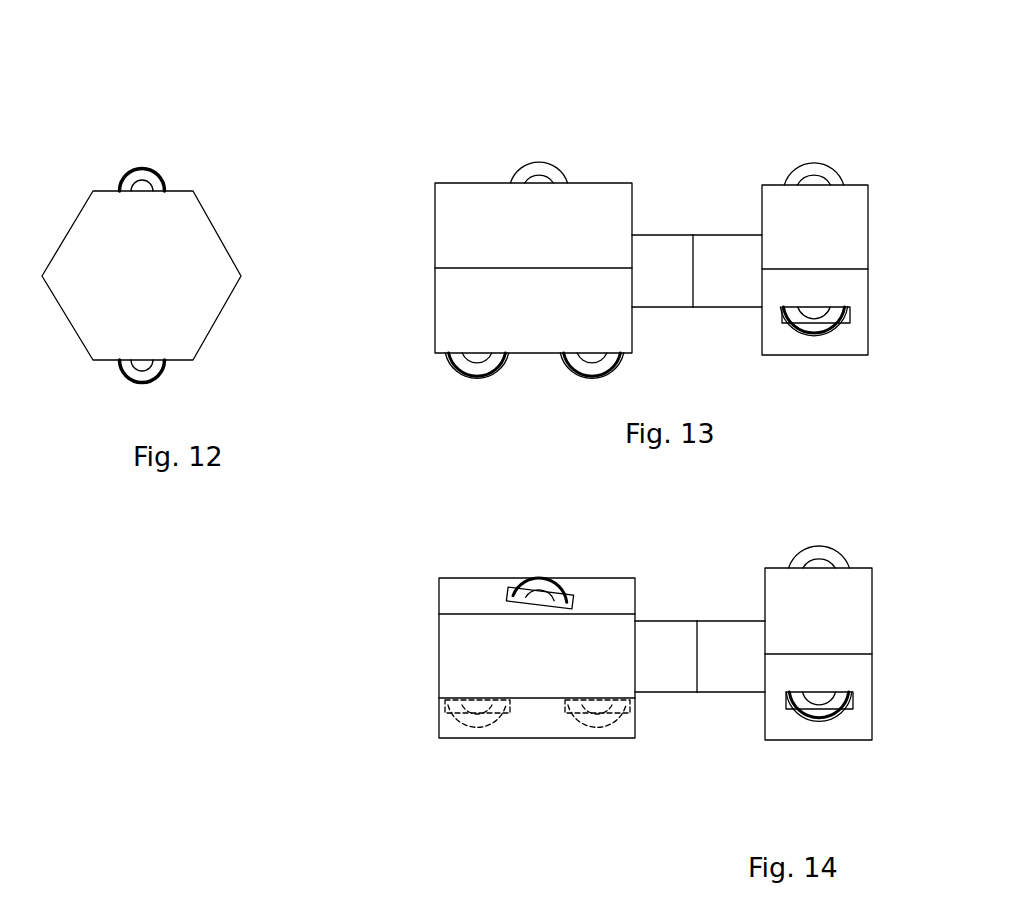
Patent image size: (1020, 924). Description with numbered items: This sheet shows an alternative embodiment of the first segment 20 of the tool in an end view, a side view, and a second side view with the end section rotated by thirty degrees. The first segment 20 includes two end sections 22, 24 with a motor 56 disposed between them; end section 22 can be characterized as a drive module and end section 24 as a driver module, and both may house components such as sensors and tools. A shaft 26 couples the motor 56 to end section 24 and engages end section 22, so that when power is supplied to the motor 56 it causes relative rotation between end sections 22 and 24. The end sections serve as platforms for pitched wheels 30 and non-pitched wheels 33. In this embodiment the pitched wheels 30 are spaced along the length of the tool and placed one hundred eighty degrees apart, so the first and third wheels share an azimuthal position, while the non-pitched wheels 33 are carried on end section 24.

In FIG. 13, the first segment 20 is at (659, 119).
In FIG. 14, the first segment 20 is at (676, 796).
In FIG. 12, the end section 22 is at (205, 209).
In FIG. 13, the end section 22 is at (435, 223).
In FIG. 14, the end section 22 is at (438, 638).
In FIG. 13, the end section 24 is at (870, 290).
In FIG. 14, the end section 24 is at (873, 673).
In FIG. 13, the shaft 26 is at (655, 248).
In FIG. 14, the shaft 26 is at (658, 633).
In FIG. 12, the pitched wheels 30 is at (157, 377).
In FIG. 13, the pitched wheels 30 is at (534, 166).
In FIG. 14, the pitched wheels 30 is at (568, 594).
In FIG. 13, the non-pitched wheels 33 is at (818, 162).
In FIG. 14, the non-pitched wheels 33 is at (822, 546).
In FIG. 13, the motor 56 is at (712, 248).
In FIG. 14, the motor 56 is at (715, 633).